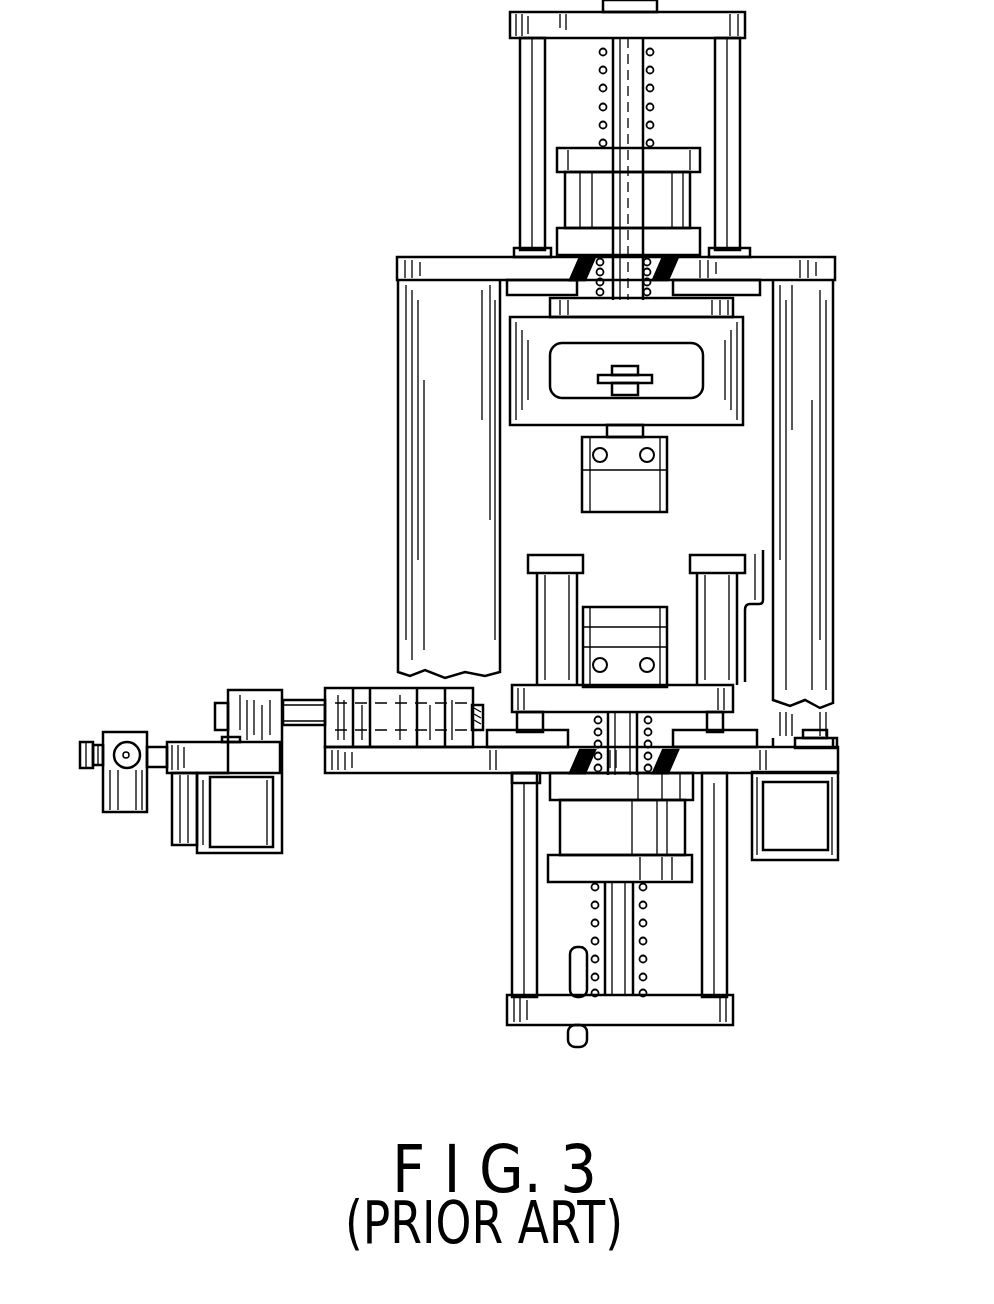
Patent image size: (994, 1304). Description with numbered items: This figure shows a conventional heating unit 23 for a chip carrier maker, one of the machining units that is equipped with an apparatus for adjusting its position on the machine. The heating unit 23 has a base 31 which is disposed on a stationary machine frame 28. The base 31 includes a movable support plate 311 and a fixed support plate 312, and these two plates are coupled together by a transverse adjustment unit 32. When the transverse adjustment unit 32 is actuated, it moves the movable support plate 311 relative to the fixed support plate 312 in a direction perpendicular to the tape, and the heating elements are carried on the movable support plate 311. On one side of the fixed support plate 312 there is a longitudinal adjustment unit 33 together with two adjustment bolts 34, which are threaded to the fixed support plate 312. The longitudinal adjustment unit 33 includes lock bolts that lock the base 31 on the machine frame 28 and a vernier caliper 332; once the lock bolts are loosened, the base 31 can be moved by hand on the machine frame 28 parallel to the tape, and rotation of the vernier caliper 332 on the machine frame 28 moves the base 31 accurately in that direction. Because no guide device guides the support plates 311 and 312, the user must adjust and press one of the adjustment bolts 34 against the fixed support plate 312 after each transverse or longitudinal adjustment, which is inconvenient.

The heating unit 23 is at (762, 232).
The stationary machine frame 28 is at (213, 853).
The base 31 is at (502, 796).
The movable support plate 311 is at (363, 760).
The fixed support plate 312 is at (282, 817).
The transverse adjustment unit 32 is at (313, 682).
The longitudinal adjustment unit 33 is at (103, 778).
The vernier caliper 332 is at (137, 813).
The adjustment bolts 34 is at (82, 747).